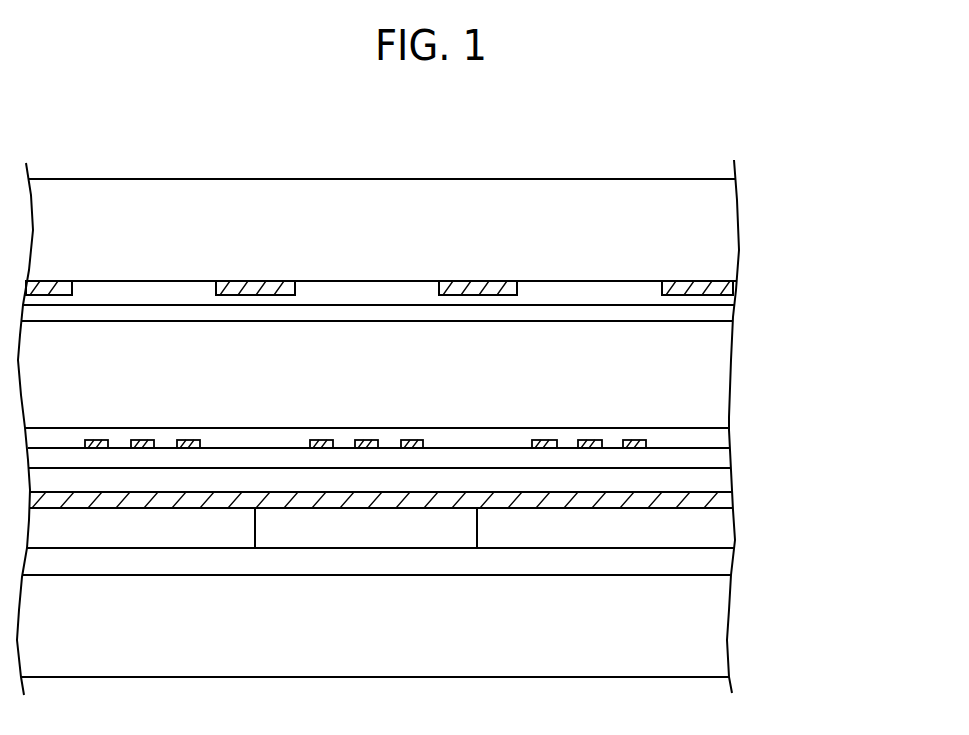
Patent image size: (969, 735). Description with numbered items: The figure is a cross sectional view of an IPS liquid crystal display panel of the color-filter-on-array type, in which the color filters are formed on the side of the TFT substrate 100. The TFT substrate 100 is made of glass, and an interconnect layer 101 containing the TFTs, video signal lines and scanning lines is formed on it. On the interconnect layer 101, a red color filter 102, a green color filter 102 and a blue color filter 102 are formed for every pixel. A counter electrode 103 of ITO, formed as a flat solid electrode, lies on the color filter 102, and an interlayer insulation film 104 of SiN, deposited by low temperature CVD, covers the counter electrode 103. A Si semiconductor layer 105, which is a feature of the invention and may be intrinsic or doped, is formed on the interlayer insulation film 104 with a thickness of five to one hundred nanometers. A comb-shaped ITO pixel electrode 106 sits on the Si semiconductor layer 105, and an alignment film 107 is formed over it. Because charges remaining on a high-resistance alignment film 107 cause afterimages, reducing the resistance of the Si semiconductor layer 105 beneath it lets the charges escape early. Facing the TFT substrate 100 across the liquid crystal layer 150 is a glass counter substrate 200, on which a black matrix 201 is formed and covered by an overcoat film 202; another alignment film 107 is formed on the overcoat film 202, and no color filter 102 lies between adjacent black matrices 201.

The TFT substrate 100 is at (718, 624).
The interconnect layer 101 is at (723, 560).
The color filter 102 is at (728, 527).
The counter electrode 103 is at (732, 498).
The interlayer insulation film 104 is at (730, 478).
The Si semiconductor layer 105 is at (728, 460).
The pixel electrode 106 is at (637, 440).
The alignment film 107 is at (718, 316).
The liquid crystal layer 150 is at (712, 355).
The counter substrate 200 is at (722, 232).
The black matrix 201 is at (478, 282).
The overcoat film 202 is at (598, 293).